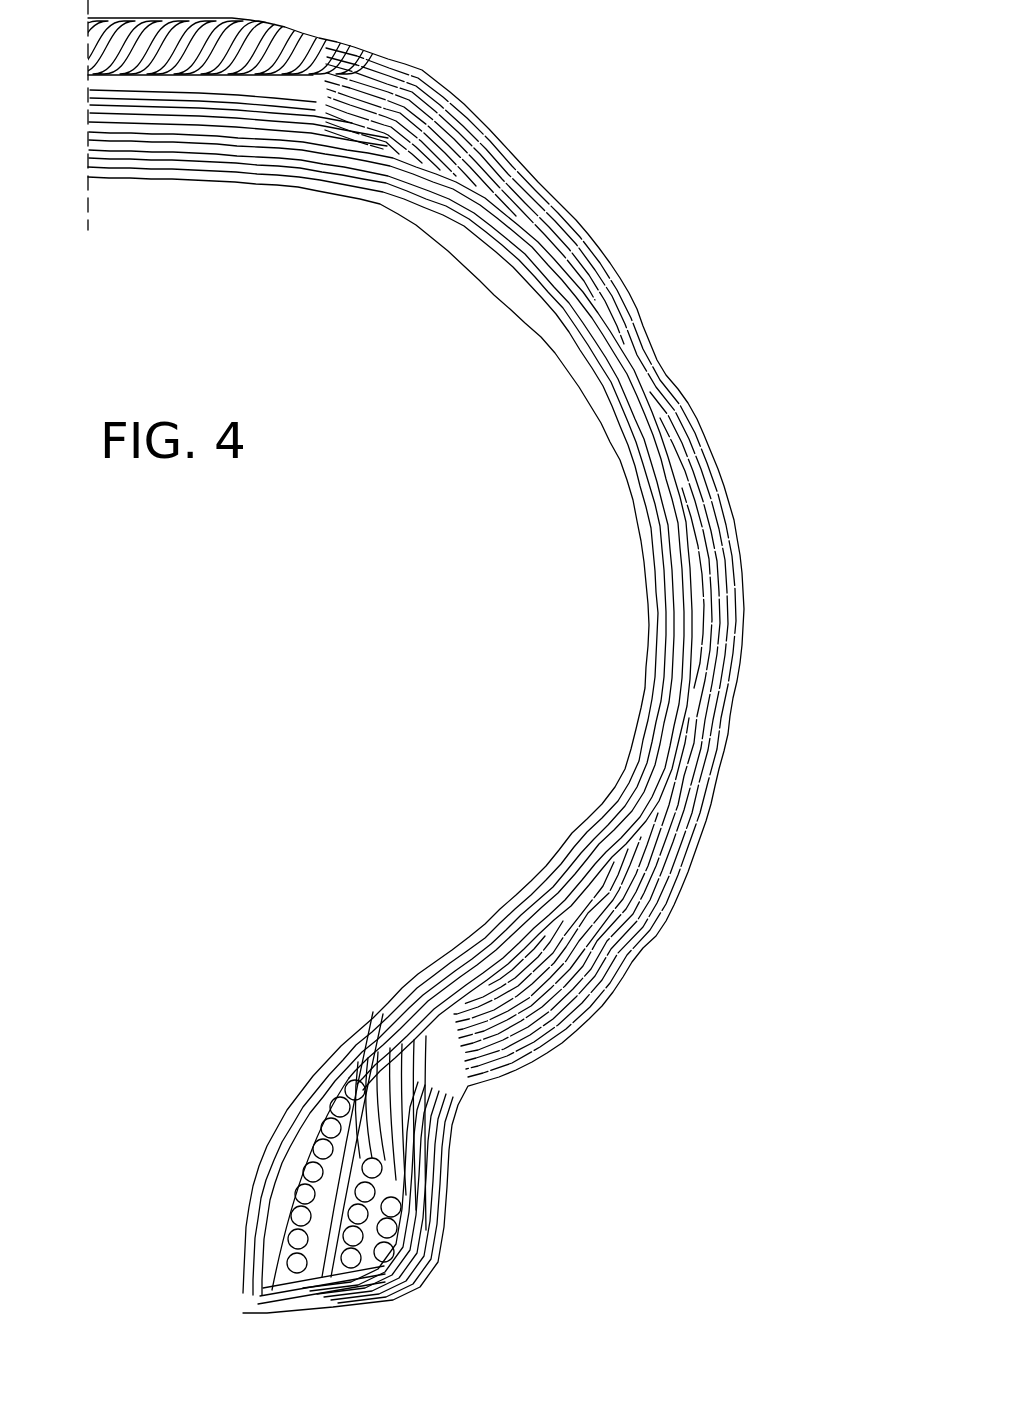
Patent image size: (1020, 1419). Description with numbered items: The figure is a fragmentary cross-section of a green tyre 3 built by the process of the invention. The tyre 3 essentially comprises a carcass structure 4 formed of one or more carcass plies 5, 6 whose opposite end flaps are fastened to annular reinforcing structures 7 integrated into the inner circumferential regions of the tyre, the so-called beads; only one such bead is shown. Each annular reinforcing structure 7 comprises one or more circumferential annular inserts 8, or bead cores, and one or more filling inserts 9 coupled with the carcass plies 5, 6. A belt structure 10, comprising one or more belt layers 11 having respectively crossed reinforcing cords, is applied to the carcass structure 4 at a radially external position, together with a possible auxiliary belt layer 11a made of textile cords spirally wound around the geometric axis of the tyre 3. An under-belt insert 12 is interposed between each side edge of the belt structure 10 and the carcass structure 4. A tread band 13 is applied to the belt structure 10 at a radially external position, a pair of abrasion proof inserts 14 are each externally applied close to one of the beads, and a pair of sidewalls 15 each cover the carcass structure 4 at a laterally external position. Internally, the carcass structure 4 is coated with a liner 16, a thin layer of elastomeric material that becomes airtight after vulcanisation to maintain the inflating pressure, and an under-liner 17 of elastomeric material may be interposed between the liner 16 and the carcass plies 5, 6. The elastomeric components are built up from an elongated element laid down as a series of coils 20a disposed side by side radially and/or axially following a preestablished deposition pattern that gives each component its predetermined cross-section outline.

The tyre 3 is at (624, 155).
The carcass structure 4 is at (432, 1014).
The carcass ply 5 is at (673, 543).
The carcass ply 6 is at (667, 473).
The annular reinforcing structure 7 is at (385, 1185).
The circumferential annular insert 8 is at (305, 1197).
The filling insert 9 is at (356, 1067).
The belt structure 10 is at (366, 99).
The belt layer 11 is at (182, 118).
The auxiliary belt layer 11a is at (122, 86).
The under-belt insert 12 is at (378, 158).
The tread band 13 is at (318, 62).
The abrasion proof insert 14 is at (433, 1247).
The sidewall 15 is at (713, 732).
The liner 16 is at (643, 700).
The under-liner 17 is at (663, 653).
The coils 20a is at (663, 803).